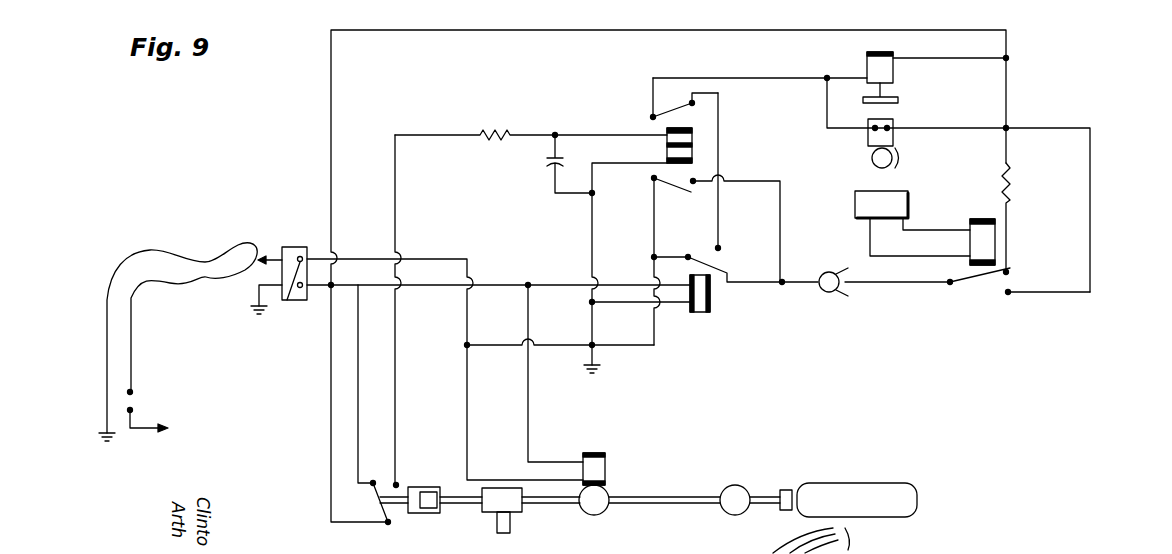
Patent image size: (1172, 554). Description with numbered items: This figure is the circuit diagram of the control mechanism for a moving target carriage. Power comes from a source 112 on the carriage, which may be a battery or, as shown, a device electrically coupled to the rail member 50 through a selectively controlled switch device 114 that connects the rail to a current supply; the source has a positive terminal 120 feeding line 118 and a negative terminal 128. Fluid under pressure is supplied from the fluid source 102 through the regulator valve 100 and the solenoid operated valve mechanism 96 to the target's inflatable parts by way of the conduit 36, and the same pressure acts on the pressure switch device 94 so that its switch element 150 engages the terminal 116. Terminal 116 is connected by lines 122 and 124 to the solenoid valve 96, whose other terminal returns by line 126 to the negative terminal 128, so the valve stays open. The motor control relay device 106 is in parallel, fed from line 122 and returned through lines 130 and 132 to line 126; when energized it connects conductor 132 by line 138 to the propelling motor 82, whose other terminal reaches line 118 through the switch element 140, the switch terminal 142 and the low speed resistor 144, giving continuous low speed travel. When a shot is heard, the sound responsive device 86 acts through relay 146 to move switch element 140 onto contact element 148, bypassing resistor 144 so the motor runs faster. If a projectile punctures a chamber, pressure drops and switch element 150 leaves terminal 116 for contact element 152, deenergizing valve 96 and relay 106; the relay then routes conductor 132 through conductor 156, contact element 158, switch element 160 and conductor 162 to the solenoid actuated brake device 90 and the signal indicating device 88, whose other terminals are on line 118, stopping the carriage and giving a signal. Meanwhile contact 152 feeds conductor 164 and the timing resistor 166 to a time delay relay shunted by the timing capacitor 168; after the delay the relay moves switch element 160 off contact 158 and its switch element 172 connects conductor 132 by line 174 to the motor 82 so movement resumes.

The conduit 36 is at (512, 528).
The rail member 50 is at (185, 240).
The propelling motor 82 is at (840, 293).
The sound responsive device 86 is at (905, 224).
The signal indicating device 88 is at (897, 143).
The solenoid actuated brake device 90 is at (897, 78).
The pressure switch device 94 is at (396, 514).
The solenoid operated valve mechanism 96 is at (606, 470).
The regulator valve 100 is at (723, 511).
The fluid source 102 is at (833, 500).
The motor control relay device 106 is at (716, 298).
The power source 112 is at (285, 302).
The switch device 114 is at (133, 402).
The terminal 116 is at (373, 480).
The line 118 is at (610, 32).
The positive terminal 120 is at (296, 301).
The line 122 is at (432, 285).
The line 124 is at (545, 318).
The line 126 is at (480, 318).
The negative terminal 128 is at (297, 250).
The line 130 is at (596, 332).
The conductor 132 is at (556, 350).
The line 138 is at (757, 276).
The switch element 140 is at (975, 284).
The switch terminal 142 is at (1012, 270).
The low speed resistor 144 is at (1012, 182).
The relay 146 is at (950, 242).
The contact element 148 is at (1012, 297).
The switch element 150 is at (383, 510).
The contact element 152 is at (400, 480).
The conductor 156 is at (719, 136).
The contact element 158 is at (692, 103).
The switch element 160 is at (670, 101).
The conductor 162 is at (806, 72).
The conductor 164 is at (420, 204).
The timing resistor 166 is at (522, 115).
The timing capacitor 168 is at (547, 162).
The relay contact 172 is at (697, 178).
The line 174 is at (770, 178).